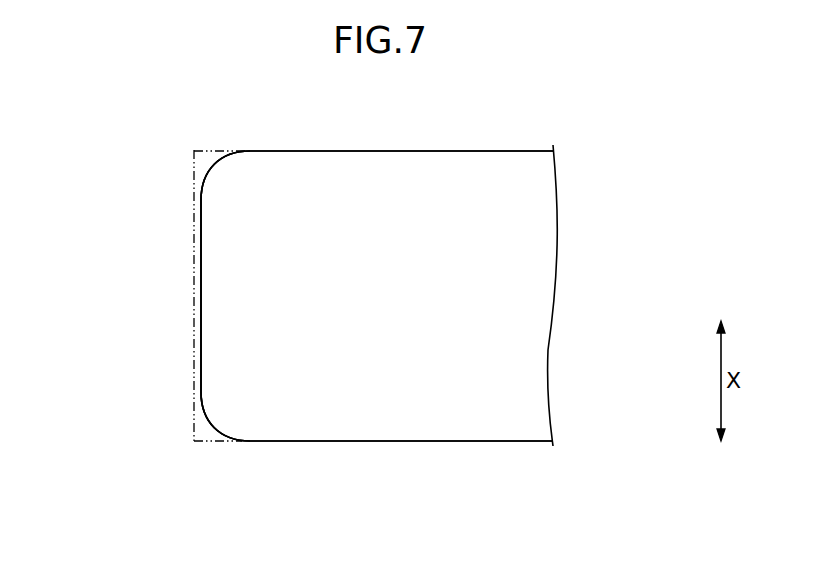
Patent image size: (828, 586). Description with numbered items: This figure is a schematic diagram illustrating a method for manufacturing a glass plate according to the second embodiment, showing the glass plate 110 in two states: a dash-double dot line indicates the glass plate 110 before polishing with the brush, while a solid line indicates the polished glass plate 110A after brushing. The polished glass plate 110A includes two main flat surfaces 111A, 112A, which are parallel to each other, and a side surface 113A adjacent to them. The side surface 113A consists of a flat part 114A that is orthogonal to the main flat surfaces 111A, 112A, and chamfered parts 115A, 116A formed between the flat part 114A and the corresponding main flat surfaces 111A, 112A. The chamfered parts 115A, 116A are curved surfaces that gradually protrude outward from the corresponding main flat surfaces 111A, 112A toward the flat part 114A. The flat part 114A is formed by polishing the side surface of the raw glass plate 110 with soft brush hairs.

The glass plate 110 is at (212, 443).
The glass plate 110A is at (536, 296).
The main flat surface 111A is at (361, 150).
The main flat surface 112A is at (362, 441).
The side surface 113A is at (92, 152).
The flat part 114A is at (195, 284).
The chamfered part 115A is at (208, 176).
The chamfered part 116A is at (208, 423).